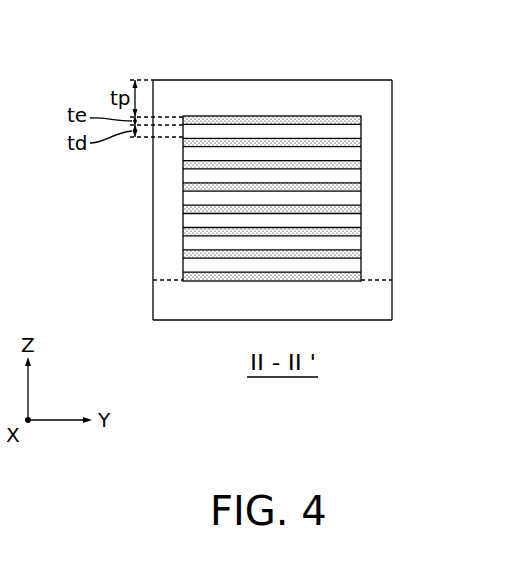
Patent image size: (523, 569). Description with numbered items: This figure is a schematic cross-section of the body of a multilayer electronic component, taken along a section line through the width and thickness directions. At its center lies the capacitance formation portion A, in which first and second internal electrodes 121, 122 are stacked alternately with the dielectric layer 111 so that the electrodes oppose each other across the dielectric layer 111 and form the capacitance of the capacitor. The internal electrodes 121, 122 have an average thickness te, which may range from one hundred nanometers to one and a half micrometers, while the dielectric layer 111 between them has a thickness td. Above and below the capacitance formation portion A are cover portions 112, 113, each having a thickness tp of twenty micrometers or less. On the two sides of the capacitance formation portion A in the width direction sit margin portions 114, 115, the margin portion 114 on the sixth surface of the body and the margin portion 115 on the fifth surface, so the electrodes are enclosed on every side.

The dielectric layer 111 is at (358, 131).
The cover portion 112 is at (280, 97).
The cover portion 113 is at (385, 297).
The margin portion 114 is at (168, 233).
The margin portion 115 is at (385, 222).
The first internal electrode 121 is at (363, 121).
The second internal electrode 122 is at (360, 140).
The capacitance formation portion A is at (178, 200).